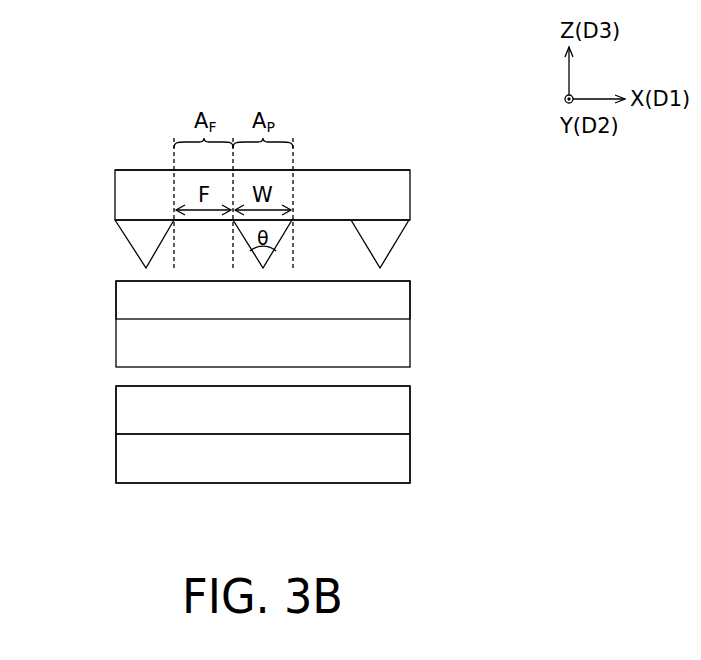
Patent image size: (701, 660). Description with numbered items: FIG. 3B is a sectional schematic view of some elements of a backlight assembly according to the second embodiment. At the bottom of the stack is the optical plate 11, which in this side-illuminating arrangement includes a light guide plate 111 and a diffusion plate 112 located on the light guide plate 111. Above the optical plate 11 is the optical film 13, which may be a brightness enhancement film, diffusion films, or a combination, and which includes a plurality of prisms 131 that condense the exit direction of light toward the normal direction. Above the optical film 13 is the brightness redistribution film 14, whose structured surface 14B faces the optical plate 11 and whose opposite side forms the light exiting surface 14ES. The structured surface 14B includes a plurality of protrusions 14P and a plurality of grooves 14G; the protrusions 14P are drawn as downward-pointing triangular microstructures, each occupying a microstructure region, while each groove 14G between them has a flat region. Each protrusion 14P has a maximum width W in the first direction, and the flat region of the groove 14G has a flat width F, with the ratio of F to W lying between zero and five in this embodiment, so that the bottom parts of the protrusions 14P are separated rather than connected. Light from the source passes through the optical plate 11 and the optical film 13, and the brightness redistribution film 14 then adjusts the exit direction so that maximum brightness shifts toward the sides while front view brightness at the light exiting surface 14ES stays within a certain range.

The optical plate 11 is at (500, 410).
The light guide plate 111 is at (395, 456).
The diffusion plate 112 is at (395, 415).
The optical film 13 is at (393, 350).
The prisms 131 is at (393, 303).
The brightness redistribution film 14 is at (395, 197).
The light exiting surface 14ES is at (380, 170).
The structured surface 14B is at (414, 247).
The protrusion 14P is at (141, 239).
The groove 14G is at (205, 250).